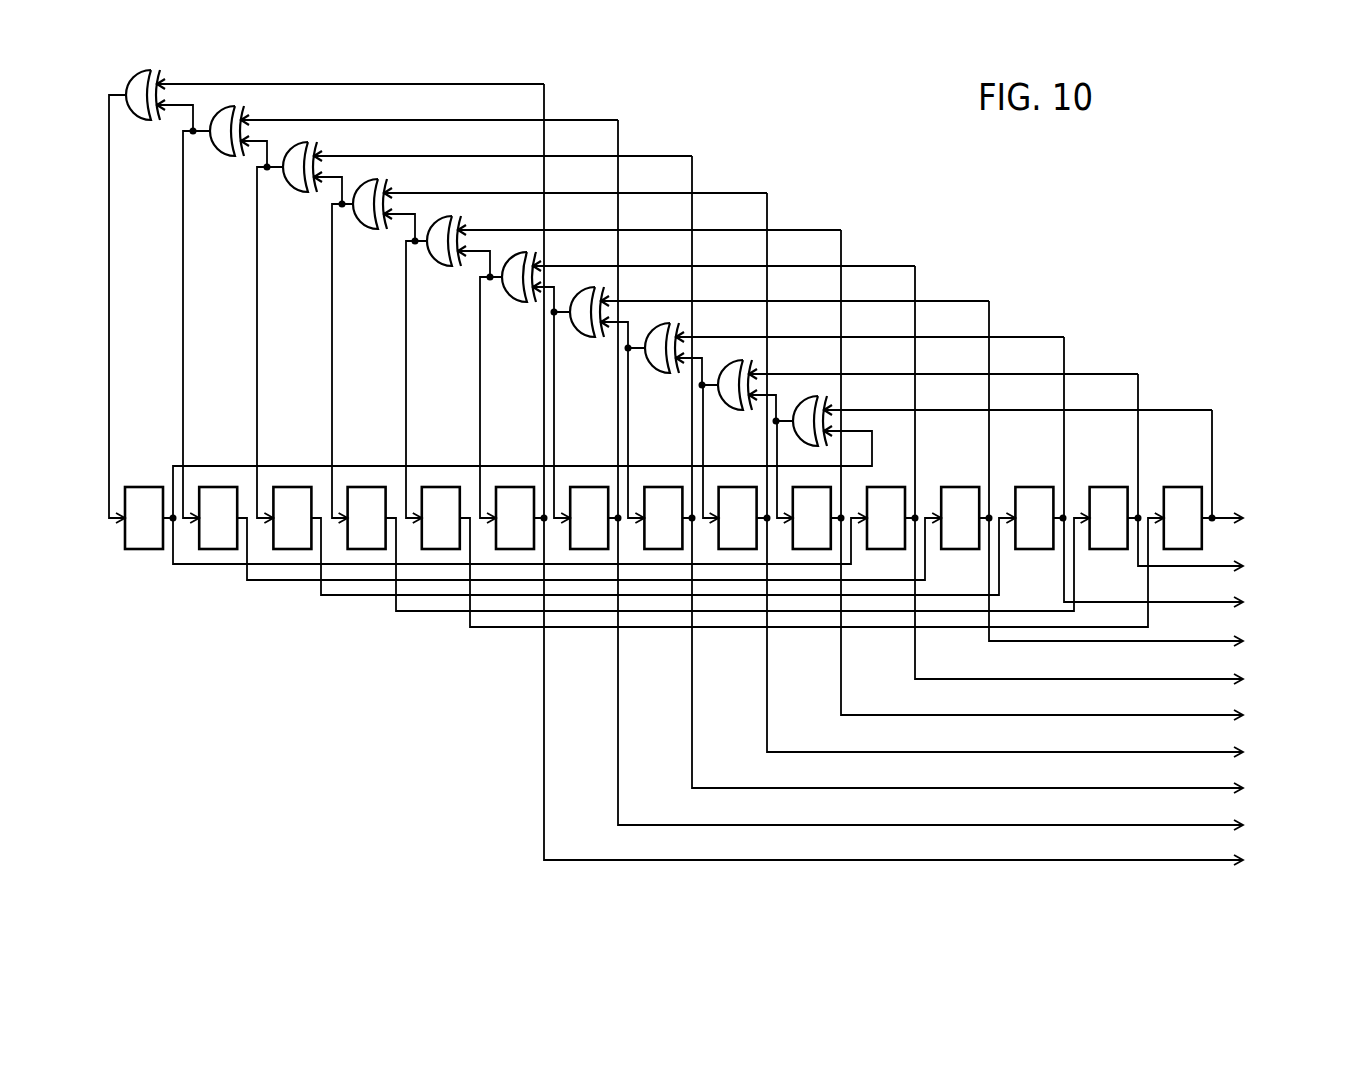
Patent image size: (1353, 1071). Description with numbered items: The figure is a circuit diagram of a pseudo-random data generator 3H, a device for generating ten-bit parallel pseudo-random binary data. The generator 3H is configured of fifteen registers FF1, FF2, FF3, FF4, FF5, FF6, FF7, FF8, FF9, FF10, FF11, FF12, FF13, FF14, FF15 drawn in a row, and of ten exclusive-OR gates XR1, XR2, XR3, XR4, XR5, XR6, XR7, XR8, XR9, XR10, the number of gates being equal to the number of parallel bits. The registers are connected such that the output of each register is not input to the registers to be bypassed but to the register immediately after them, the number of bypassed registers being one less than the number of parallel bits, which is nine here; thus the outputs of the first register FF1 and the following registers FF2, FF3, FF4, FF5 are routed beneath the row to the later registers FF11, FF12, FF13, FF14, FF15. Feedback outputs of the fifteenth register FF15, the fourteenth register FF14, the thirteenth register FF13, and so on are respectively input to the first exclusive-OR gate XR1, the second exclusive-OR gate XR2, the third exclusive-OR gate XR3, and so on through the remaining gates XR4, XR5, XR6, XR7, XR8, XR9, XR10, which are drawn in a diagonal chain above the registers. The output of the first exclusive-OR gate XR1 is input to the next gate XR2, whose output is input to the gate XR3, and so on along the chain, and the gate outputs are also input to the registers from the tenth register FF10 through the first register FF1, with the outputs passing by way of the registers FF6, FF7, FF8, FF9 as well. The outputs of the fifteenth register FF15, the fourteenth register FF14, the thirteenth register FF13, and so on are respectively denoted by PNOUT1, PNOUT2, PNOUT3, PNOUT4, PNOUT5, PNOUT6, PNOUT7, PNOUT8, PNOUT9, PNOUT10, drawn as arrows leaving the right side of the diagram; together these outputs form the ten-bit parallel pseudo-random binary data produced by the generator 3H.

The pseudo-random data generator 3H is at (1060, 218).
The first exclusive-OR gate XR1 is at (812, 394).
The second exclusive-OR gate XR2 is at (738, 357).
The third exclusive-OR gate XR3 is at (664, 321).
The exclusive-OR gate XR4 is at (590, 284).
The exclusive-OR gate XR5 is at (513, 249).
The exclusive-OR gate XR6 is at (440, 213).
The exclusive-OR gate XR7 is at (370, 177).
The exclusive-OR gate XR8 is at (302, 140).
The exclusive-OR gate XR9 is at (223, 156).
The exclusive-OR gate XR10 is at (138, 118).
The first register FF1 is at (144, 518).
The register FF2 is at (218, 518).
The register FF3 is at (292, 518).
The register FF4 is at (367, 518).
The register FF5 is at (441, 518).
The register FF6 is at (515, 518).
The register FF7 is at (589, 518).
The register FF8 is at (663, 518).
The register FF9 is at (738, 518).
The register FF10 is at (812, 518).
The register FF11 is at (886, 518).
The register FF12 is at (960, 518).
The thirteenth register FF13 is at (1034, 518).
The fourteenth register FF14 is at (1109, 518).
The fifteenth register FF15 is at (1183, 518).
The output PNOUT1 is at (1247, 480).
The output PNOUT2 is at (1215, 485).
The output PNOUT3 is at (1178, 485).
The output PNOUT4 is at (1141, 486).
The output PNOUT5 is at (1104, 488).
The output PNOUT6 is at (1067, 488).
The output PNOUT7 is at (1030, 488).
The output PNOUT8 is at (992, 487).
The output PNOUT9 is at (955, 488).
The output PNOUT10 is at (919, 487).